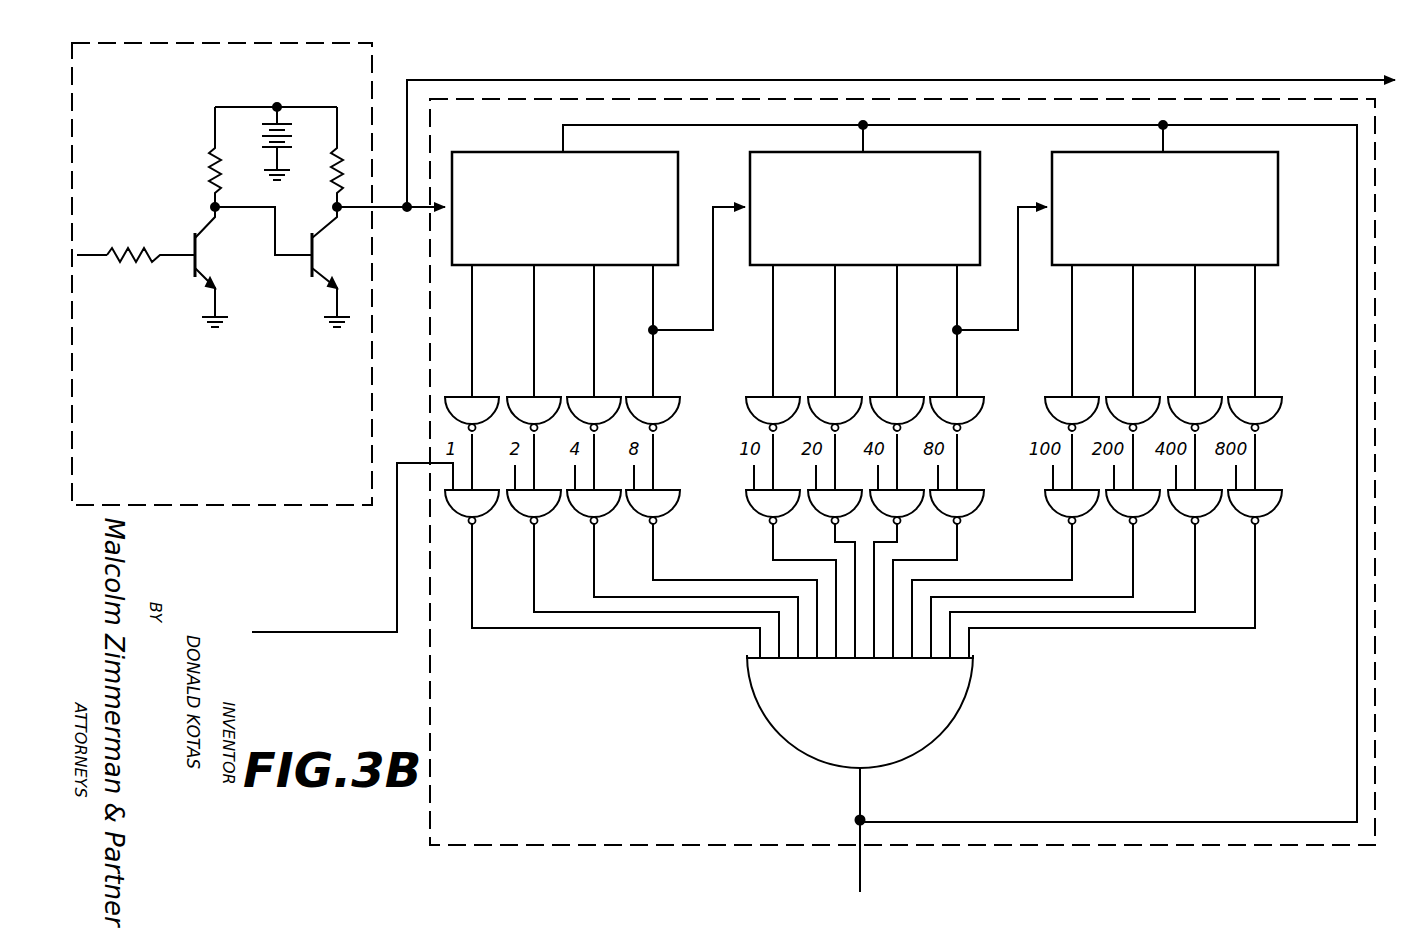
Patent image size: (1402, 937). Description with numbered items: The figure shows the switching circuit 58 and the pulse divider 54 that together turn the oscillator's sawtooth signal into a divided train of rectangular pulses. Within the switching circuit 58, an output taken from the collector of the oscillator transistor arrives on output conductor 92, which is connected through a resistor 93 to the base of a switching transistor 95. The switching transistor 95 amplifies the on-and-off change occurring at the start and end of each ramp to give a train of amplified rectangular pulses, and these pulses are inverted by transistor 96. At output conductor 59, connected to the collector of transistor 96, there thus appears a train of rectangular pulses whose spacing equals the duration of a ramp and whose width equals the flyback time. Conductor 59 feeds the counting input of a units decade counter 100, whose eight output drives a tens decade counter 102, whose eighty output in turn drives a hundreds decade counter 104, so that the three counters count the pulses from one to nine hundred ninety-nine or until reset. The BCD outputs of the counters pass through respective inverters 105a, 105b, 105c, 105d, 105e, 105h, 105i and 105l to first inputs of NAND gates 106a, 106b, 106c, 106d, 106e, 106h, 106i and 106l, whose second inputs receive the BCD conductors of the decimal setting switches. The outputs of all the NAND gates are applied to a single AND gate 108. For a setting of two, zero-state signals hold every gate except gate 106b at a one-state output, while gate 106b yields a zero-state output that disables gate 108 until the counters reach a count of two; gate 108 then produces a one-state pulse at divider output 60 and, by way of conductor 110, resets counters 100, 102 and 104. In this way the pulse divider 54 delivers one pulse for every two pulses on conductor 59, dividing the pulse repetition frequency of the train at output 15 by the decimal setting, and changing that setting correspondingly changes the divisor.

The output 15 is at (976, 80).
The pulse divider 54 is at (446, 716).
The switching circuit 58 is at (323, 505).
The output conductor 59 is at (382, 208).
The output 60 is at (859, 871).
The output conductor 92 is at (91, 255).
The resistor 93 is at (142, 264).
The switching transistor 95 is at (188, 240).
The transistor 96 is at (310, 264).
The units decade counter 100 is at (452, 267).
The tens decade counter 102 is at (757, 265).
The hundreds decade counter 104 is at (1062, 265).
The inverter 105a is at (490, 397).
The inverter 105b is at (552, 397).
The inverter 105c is at (612, 397).
The inverter 105d is at (673, 397).
The inverter 105e is at (788, 397).
The inverter 105h is at (976, 397).
The inverter 105i is at (1090, 397).
The inverter 105l is at (1280, 397).
The NAND gate 106a is at (490, 513).
The NAND gate 106b is at (552, 513).
The NAND gate 106c is at (612, 513).
The NAND gate 106d is at (671, 513).
The NAND gate 106e is at (747, 497).
The NAND gate 106h is at (984, 497).
The NAND gate 106i is at (1052, 516).
The NAND gate 106l is at (1278, 500).
The AND gate 108 is at (966, 712).
The conductor 110 is at (1194, 822).